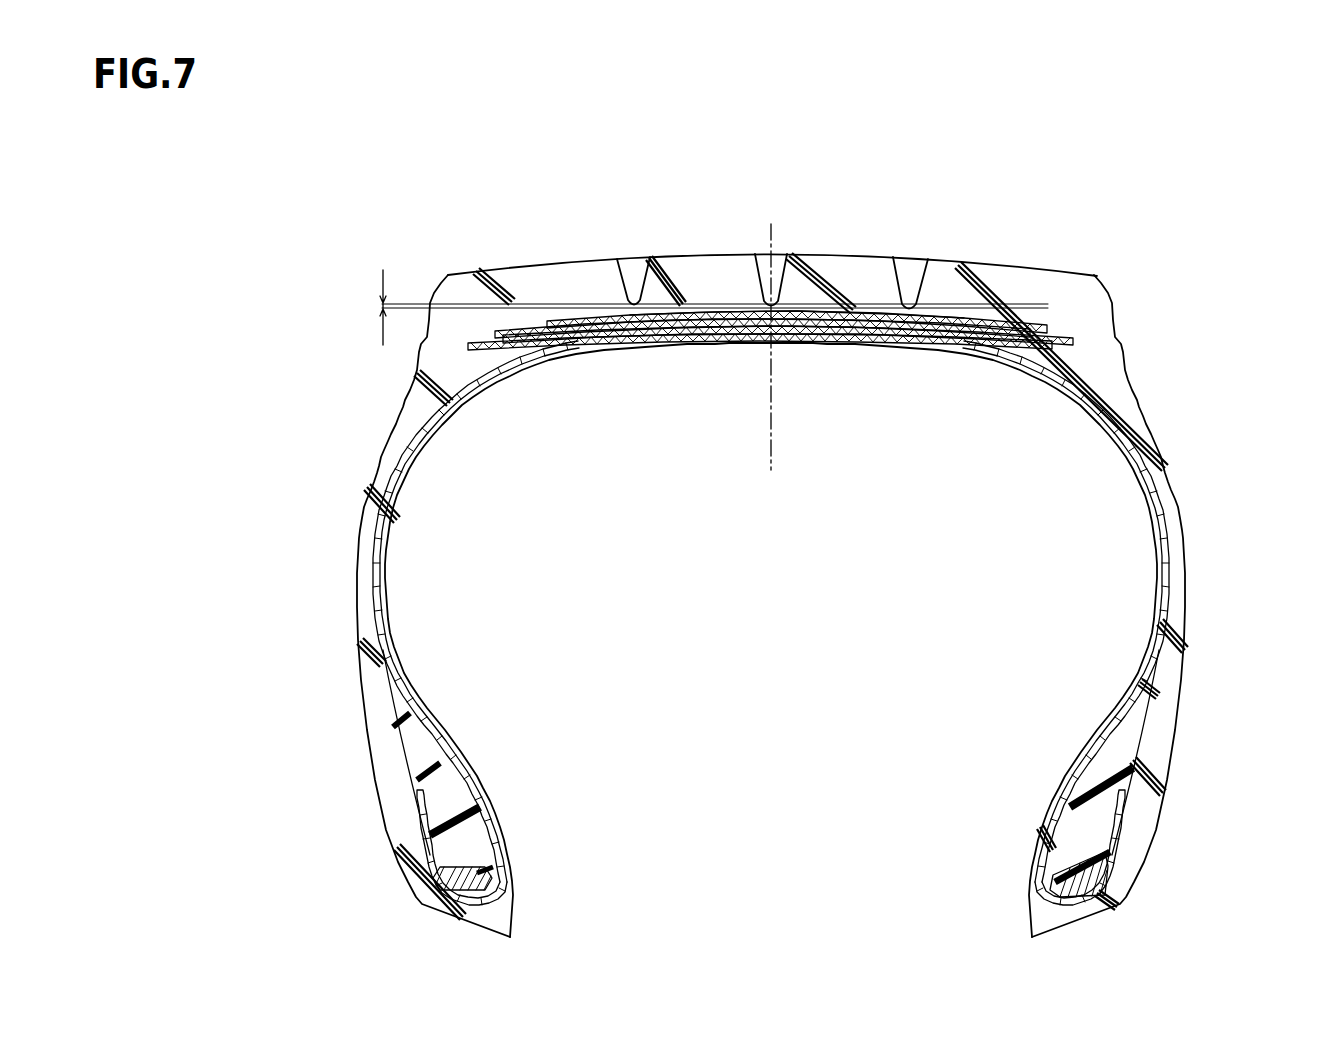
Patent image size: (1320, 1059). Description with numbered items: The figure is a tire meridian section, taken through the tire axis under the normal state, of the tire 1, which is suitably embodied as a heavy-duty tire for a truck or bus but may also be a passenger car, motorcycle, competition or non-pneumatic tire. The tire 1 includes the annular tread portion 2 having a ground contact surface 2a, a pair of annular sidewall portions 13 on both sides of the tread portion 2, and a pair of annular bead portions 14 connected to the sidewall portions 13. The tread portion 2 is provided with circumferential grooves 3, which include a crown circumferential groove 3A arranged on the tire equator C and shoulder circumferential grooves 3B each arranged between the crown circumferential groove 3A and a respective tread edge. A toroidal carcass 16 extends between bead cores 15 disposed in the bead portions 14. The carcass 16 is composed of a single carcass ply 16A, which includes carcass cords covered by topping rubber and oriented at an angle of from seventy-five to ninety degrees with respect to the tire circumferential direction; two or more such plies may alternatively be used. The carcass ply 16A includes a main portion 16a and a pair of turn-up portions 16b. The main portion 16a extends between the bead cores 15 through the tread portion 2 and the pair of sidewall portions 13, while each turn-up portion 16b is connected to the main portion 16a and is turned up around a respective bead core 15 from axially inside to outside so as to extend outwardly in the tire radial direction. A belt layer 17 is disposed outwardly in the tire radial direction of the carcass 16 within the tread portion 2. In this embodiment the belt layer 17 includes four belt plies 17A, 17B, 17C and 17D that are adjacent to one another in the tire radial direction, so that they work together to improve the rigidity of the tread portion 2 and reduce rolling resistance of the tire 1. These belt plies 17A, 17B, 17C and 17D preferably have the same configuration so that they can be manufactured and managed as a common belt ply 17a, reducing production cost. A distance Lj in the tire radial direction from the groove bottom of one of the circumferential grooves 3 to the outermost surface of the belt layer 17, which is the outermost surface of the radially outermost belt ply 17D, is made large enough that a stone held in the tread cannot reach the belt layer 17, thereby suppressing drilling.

The tire 1 is at (1176, 199).
The tread portion 2 is at (808, 304).
The ground contact surface 2a is at (679, 240).
The circumferential grooves 3 is at (761, 202).
The crown circumferential groove 3A is at (786, 224).
The shoulder circumferential grooves 3B is at (905, 262).
The sidewall portions 13 is at (1204, 493).
The bead portions 14 is at (1178, 864).
The bead cores 15 is at (1078, 892).
The carcass 16 is at (771, 623).
The carcass ply 16A is at (771, 623).
The main portion 16a is at (1152, 638).
The turn-up portions 16b is at (1113, 828).
The belt layer 17 is at (770, 346).
The belt ply 17A is at (790, 330).
The belt ply 17B is at (853, 337).
The belt ply 17C is at (905, 342).
The belt ply 17D is at (970, 347).
The common belt ply 17a is at (737, 312).
The tire equator C is at (771, 331).
The distance Lj is at (698, 307).